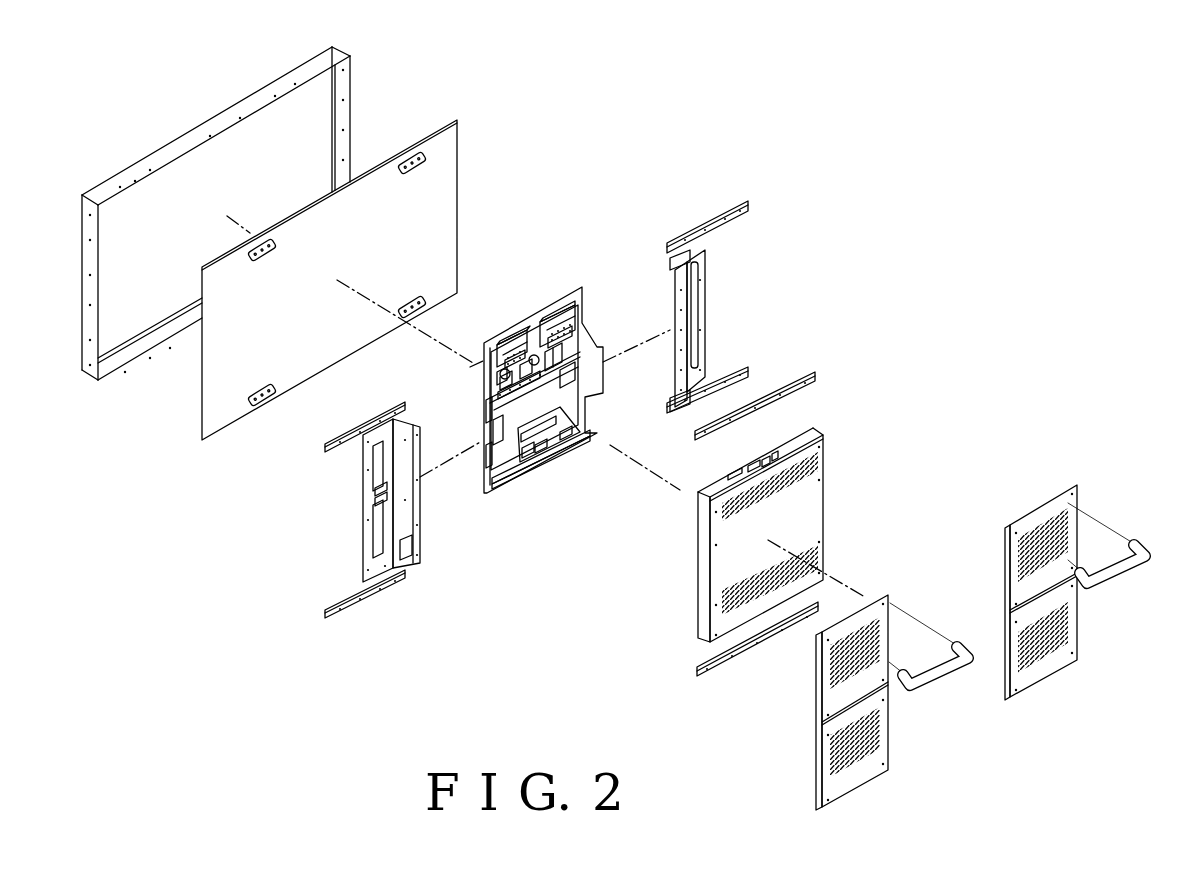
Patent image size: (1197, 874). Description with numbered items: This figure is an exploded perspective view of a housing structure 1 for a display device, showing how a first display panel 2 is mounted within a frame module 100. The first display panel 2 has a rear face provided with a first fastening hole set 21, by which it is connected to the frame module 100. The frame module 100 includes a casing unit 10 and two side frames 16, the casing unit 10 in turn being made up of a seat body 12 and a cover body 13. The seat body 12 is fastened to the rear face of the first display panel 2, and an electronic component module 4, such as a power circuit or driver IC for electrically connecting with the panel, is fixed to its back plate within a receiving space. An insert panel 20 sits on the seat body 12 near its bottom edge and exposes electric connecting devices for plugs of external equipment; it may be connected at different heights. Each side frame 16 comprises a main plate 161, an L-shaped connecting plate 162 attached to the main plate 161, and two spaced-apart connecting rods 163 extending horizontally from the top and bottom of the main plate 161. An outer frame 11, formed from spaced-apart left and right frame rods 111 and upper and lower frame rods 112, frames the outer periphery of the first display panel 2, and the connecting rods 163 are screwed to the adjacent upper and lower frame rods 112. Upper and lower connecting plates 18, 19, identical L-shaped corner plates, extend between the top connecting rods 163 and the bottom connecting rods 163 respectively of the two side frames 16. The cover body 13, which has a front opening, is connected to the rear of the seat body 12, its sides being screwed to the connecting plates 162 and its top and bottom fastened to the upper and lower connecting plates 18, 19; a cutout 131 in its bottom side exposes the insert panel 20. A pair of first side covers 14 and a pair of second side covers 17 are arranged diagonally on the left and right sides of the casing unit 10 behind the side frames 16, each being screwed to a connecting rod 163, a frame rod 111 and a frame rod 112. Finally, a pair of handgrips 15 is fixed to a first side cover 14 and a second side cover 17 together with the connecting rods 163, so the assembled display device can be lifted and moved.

The housing structure 1 is at (1045, 114).
The frame module 100 is at (933, 244).
The first display panel 2 is at (366, 263).
The first fastening hole set 21 is at (270, 361).
The electronic component module 4 is at (588, 327).
The casing unit 10 is at (750, 531).
The outer frame 11 is at (276, 231).
The left and right frame rods 111 is at (345, 141).
The upper and lower frame rods 112 is at (190, 142).
The seat body 12 is at (558, 374).
The cover body 13 is at (750, 535).
The cutout 131 is at (707, 616).
The first side covers 14 is at (928, 616).
The handgrips 15 is at (955, 674).
The side frames 16 is at (540, 408).
The main plate 161 is at (370, 507).
The connecting plate 162 is at (403, 497).
The connecting rods 163 is at (360, 425).
The second side covers 17 is at (823, 680).
The upper connecting plate 18 is at (807, 387).
The lower connecting plate 19 is at (697, 673).
The insert panel 20 is at (571, 449).